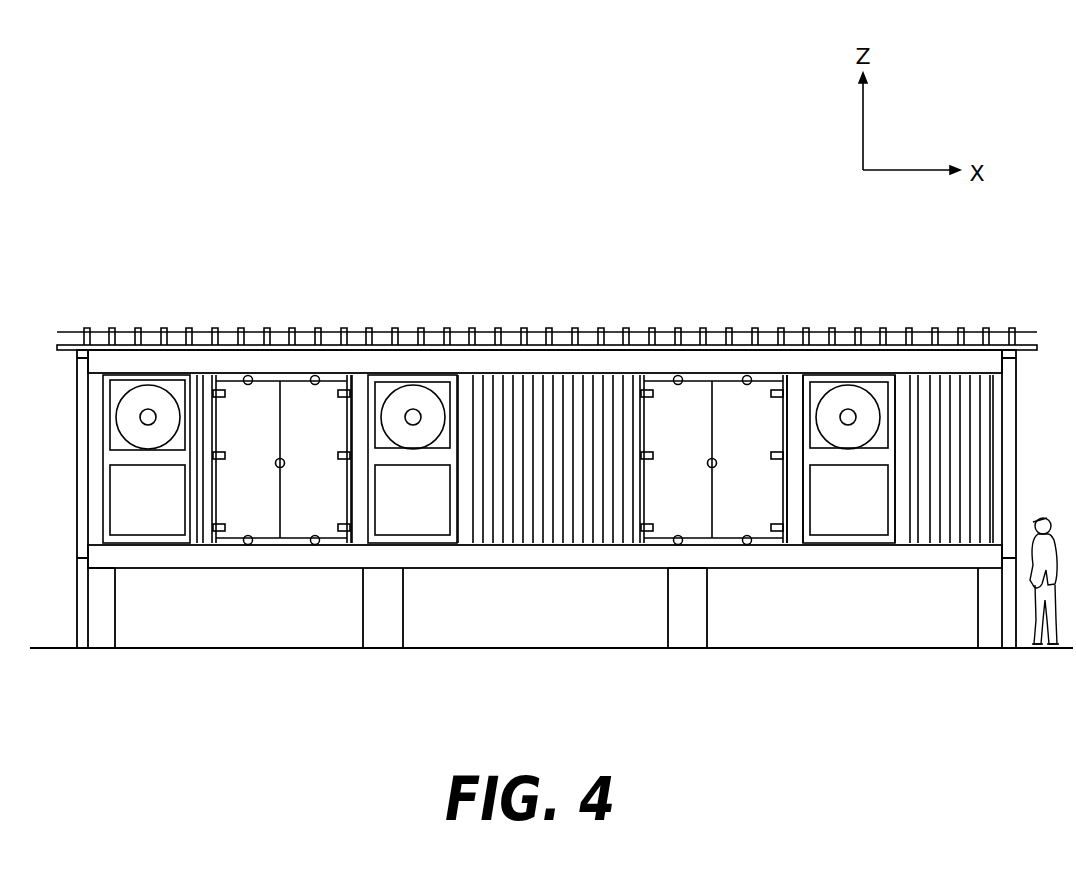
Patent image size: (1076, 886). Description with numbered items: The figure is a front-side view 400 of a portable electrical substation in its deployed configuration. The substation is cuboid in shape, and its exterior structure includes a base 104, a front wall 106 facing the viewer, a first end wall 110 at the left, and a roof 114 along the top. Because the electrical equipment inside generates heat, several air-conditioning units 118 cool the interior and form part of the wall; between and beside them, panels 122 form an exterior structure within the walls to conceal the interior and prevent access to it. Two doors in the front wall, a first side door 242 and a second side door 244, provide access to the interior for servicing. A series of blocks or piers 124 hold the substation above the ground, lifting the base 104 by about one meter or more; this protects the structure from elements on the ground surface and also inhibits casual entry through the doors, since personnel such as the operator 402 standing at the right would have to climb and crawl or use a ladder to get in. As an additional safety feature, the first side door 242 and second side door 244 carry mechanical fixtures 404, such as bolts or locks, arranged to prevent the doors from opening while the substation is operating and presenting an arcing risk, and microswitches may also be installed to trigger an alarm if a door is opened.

The base 104 is at (353, 572).
The front wall 106 is at (550, 543).
The first end wall 110 is at (77, 476).
The roof 114 is at (737, 328).
The air-conditioning unit 118 is at (168, 382).
The panel 122 is at (583, 405).
The pier 124 is at (92, 640).
The first side door 242 is at (271, 408).
The second side door 244 is at (762, 525).
The front-side view 400 is at (375, 746).
The operator 402 is at (1047, 650).
The mechanical fixture 404 is at (680, 376).